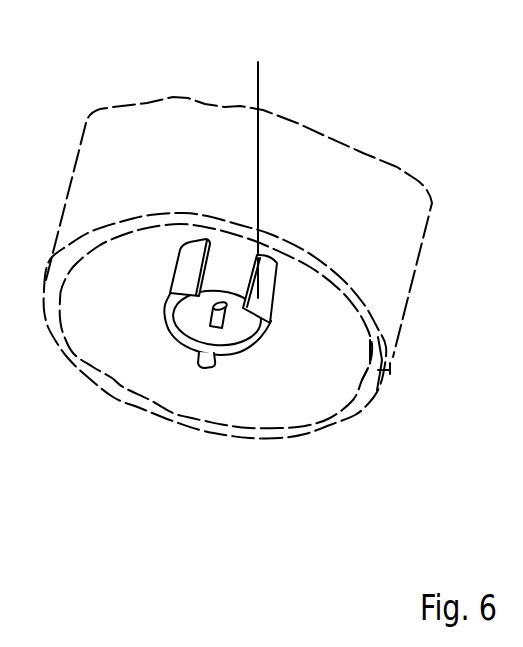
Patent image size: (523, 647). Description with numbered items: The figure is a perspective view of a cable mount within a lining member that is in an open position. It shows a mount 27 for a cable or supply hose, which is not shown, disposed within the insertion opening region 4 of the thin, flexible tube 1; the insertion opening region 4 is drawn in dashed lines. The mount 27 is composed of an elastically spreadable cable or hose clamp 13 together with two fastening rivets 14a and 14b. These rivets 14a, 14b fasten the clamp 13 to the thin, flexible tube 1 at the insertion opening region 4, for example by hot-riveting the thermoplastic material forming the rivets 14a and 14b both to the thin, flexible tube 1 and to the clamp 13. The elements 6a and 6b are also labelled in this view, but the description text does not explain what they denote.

The thin, flexible tube 1 is at (322, 143).
The insertion opening region 4 is at (252, 391).
The first end of ring 6a is at (328, 421).
The second end of ring 6b is at (377, 390).
The cable or hose clamp 13 is at (238, 160).
The fastening rivet 14a is at (203, 362).
The fastening rivet 14b is at (212, 327).
The mount 27 is at (166, 310).